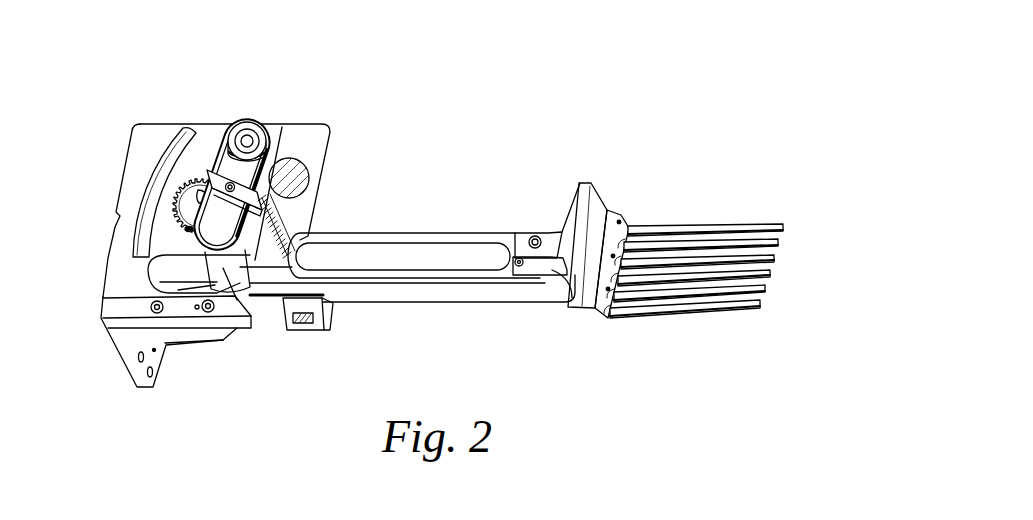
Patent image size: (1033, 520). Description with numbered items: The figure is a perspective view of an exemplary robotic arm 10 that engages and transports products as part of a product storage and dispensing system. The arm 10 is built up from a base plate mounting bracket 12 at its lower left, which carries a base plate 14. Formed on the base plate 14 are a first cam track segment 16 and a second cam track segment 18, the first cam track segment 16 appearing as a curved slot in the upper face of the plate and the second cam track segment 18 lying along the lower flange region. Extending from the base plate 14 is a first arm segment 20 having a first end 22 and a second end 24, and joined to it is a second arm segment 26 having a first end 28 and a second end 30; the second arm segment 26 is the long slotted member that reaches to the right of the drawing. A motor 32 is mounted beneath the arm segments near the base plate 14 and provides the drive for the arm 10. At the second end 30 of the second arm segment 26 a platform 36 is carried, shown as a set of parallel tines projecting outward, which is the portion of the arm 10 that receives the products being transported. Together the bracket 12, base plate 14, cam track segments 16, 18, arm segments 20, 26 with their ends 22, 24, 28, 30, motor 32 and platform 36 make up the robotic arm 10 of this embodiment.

The robotic arm 10 is at (628, 73).
The base plate mounting bracket 12 is at (171, 365).
The base plate 14 is at (242, 116).
The first cam track segment 16 is at (139, 161).
The second cam track segment 18 is at (190, 302).
The first arm segment 20 is at (283, 127).
The first end 22 is at (287, 184).
The second end 24 is at (231, 298).
The second arm segment 26 is at (445, 230).
The first end 28 is at (158, 265).
The second end 30 is at (548, 287).
The motor 32 is at (333, 311).
The platform 36 is at (733, 222).